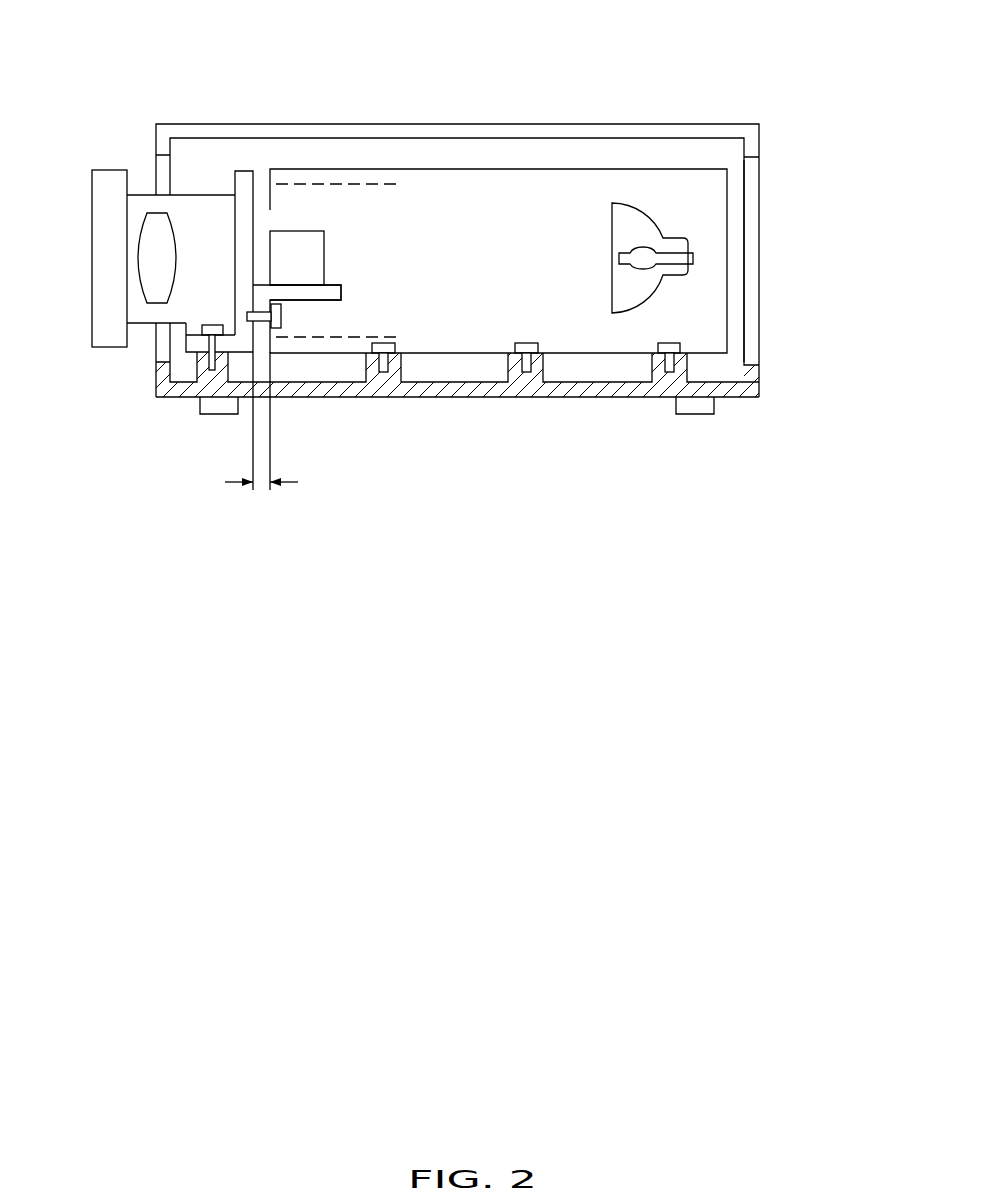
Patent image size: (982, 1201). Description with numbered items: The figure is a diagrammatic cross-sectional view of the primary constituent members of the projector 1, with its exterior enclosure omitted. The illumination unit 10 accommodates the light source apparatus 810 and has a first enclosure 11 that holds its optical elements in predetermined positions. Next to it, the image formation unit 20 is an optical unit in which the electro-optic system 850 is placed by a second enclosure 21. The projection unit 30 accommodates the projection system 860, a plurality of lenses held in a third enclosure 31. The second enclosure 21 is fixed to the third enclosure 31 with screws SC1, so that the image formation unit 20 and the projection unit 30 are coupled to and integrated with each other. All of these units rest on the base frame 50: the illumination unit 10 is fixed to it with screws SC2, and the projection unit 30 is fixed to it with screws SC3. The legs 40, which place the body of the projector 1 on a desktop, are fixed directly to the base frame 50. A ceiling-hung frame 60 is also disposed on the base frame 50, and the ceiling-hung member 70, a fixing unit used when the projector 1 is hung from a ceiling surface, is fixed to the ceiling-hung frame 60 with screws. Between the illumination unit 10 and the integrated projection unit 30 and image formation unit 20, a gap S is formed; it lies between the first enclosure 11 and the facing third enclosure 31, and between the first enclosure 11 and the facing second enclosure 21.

The projector 1 is at (588, 58).
The illumination unit 10 is at (457, 407).
The first enclosure 11 is at (415, 168).
The image formation unit 20 is at (333, 265).
The second enclosure 21 is at (341, 292).
The projection unit 30 is at (163, 281).
The third enclosure 31 is at (203, 193).
The legs 40 is at (699, 420).
The base frame 50 is at (604, 404).
The ceiling-hung frame 60 is at (769, 277).
The ceiling-hung member 70 is at (490, 115).
The light source apparatus 810 is at (648, 205).
The electro-optic system 850 is at (302, 220).
The projection system 860 is at (147, 193).
The screws SC1 is at (284, 319).
The screws SC2 is at (529, 342).
The screws SC3 is at (209, 324).
The gap S is at (261, 435).